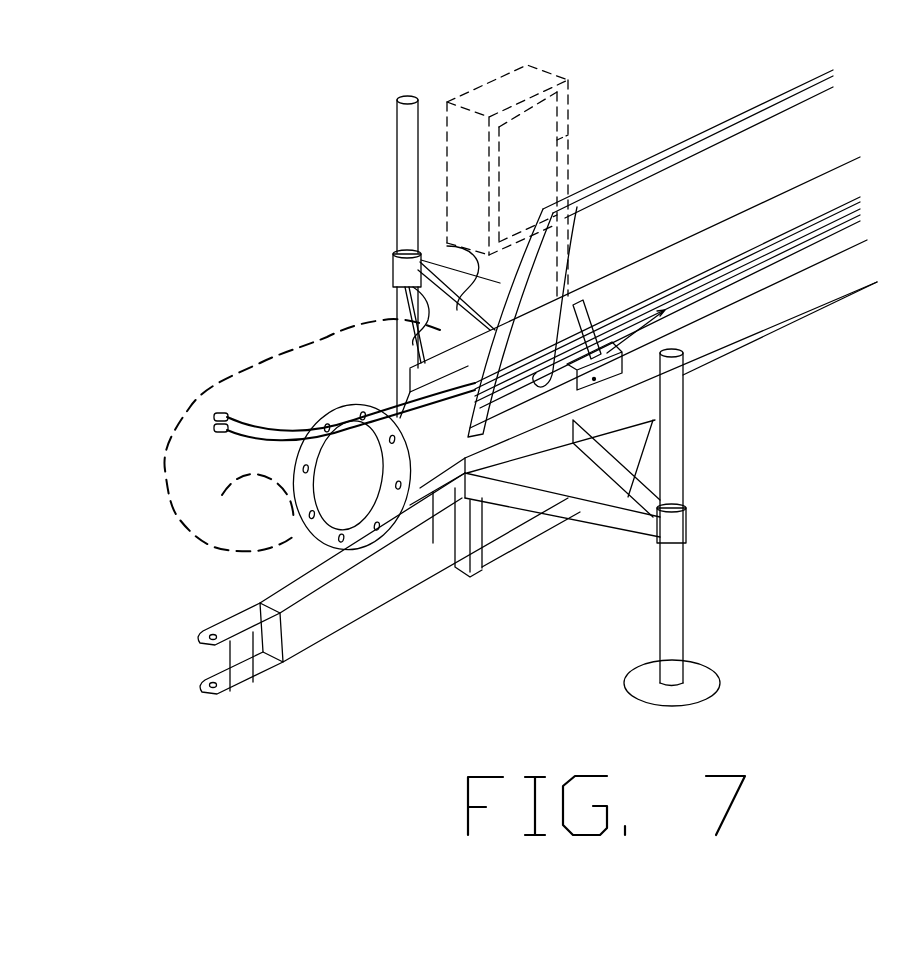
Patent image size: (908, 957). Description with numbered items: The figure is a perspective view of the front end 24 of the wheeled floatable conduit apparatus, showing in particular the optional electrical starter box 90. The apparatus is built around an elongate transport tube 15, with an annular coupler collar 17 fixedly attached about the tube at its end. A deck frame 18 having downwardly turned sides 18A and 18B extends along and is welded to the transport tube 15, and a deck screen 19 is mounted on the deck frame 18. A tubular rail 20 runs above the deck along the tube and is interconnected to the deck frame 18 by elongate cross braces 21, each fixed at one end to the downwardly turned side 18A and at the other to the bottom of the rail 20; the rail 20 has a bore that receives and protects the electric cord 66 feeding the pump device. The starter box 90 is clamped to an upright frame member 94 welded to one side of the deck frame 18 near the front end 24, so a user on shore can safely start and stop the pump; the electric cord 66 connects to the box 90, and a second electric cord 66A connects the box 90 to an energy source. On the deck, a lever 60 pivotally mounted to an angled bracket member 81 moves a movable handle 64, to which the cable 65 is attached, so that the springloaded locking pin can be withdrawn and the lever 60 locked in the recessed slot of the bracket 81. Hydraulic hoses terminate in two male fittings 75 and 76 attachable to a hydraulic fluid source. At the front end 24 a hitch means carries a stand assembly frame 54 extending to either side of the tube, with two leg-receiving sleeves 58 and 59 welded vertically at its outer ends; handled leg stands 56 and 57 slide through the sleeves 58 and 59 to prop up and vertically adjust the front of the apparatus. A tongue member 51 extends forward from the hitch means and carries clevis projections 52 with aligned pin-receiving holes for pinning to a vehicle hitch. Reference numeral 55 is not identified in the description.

The transport tube 15 is at (801, 322).
The annular coupler collar 17 is at (339, 406).
The deck frame 18 is at (820, 250).
The downwardly turned side 18A is at (520, 420).
The downwardly turned side 18B is at (408, 382).
The deck screen 19 is at (783, 217).
The tubular rail 20 is at (733, 118).
The cross brace 21 is at (487, 352).
The front end 24 is at (315, 549).
The tongue member 51 is at (380, 613).
The clevis projections 52 is at (200, 680).
The stand assembly frame 54 is at (625, 537).
The lower post 55 is at (399, 299).
The handled leg stand 56 is at (684, 600).
The handled leg stand 57 is at (396, 163).
The leg-receiving sleeve 58 is at (688, 527).
The leg-receiving sleeve 59 is at (393, 272).
The lever 60 is at (587, 310).
The movable handle 64 is at (671, 342).
The cable 65 is at (701, 296).
The electric cord 66 is at (592, 208).
The second electric cord 66A is at (224, 378).
The male fitting 75 is at (218, 432).
The male fitting 76 is at (228, 415).
The angled bracket member 81 is at (615, 370).
The electrical starter box 90 is at (498, 88).
The upright frame member 94 is at (569, 146).